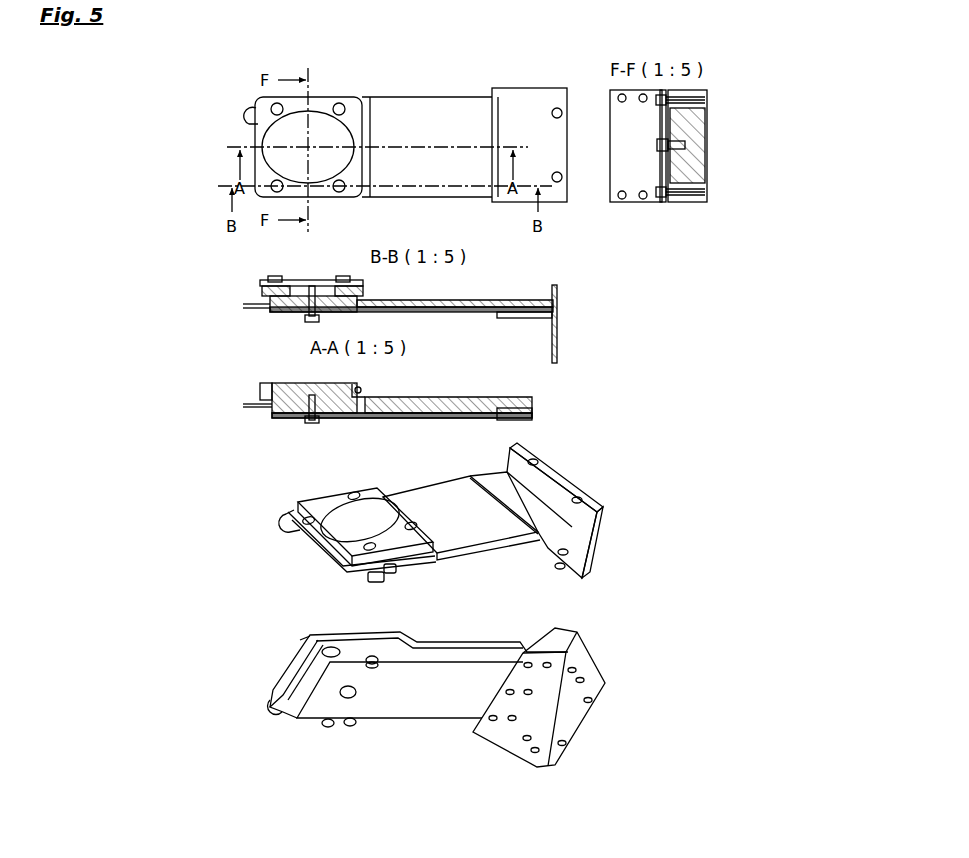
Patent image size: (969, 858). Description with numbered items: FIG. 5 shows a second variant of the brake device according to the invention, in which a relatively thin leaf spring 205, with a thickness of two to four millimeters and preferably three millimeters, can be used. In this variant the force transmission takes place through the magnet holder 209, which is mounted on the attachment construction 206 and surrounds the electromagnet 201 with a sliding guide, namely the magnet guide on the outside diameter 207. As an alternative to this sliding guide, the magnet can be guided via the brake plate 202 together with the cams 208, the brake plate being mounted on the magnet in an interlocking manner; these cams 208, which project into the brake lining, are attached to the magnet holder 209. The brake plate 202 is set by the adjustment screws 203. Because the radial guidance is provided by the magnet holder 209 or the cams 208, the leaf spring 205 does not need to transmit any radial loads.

The electromagnet 201 is at (302, 502).
The brake plate 202 is at (262, 383).
The adjustment screws for brake plate 203 is at (378, 580).
The leaf spring 205 is at (411, 362).
The attachment construction 206 is at (560, 475).
The magnet guide on outside diameter 207 is at (362, 390).
The magnet guide by cams which project into the brake lining 208 is at (343, 278).
The magnet holder 209 is at (498, 402).